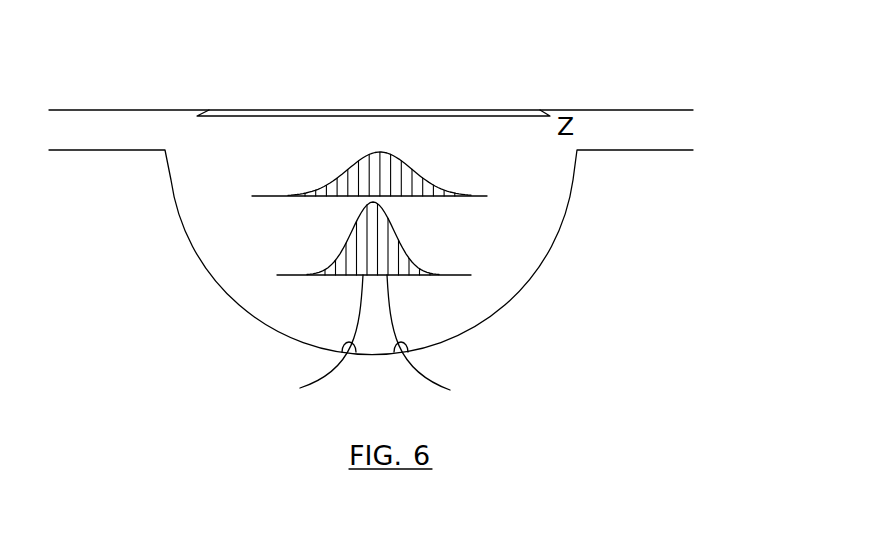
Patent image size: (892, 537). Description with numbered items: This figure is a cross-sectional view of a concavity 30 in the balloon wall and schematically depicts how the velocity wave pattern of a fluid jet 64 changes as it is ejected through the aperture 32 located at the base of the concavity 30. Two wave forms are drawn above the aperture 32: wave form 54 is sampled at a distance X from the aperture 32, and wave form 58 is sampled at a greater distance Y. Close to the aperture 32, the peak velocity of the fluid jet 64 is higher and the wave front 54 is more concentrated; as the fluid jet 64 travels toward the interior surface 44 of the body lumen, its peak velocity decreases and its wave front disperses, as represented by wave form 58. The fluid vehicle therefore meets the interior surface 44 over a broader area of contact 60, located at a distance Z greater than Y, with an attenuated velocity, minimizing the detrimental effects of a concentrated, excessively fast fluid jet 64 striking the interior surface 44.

The interior surface of the body lumen 44 is at (613, 110).
The area of contact 60 is at (517, 113).
The concavity 30 is at (518, 243).
The wave form 58 is at (267, 173).
The wave form 54 is at (317, 243).
The fluid jet 64 is at (363, 320).
The aperture 32 is at (397, 342).